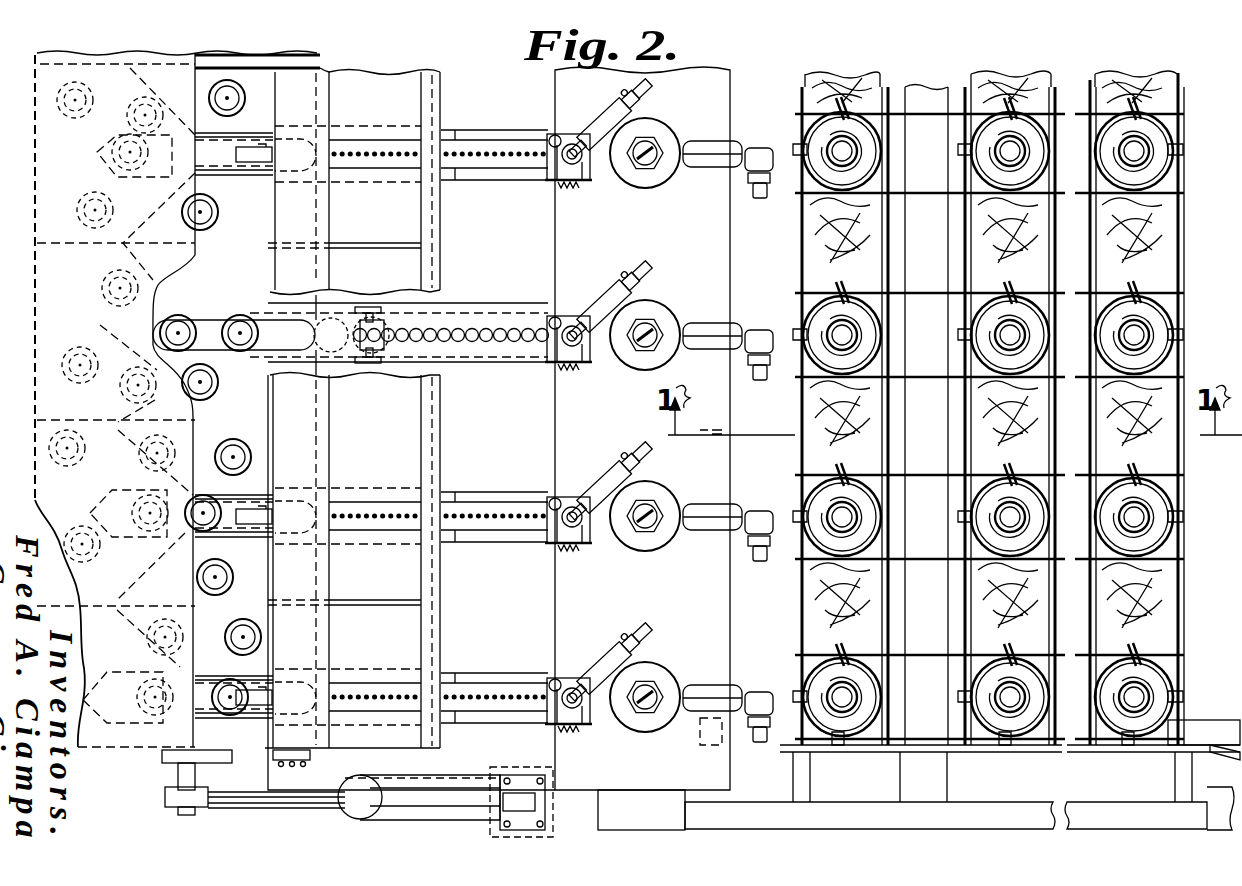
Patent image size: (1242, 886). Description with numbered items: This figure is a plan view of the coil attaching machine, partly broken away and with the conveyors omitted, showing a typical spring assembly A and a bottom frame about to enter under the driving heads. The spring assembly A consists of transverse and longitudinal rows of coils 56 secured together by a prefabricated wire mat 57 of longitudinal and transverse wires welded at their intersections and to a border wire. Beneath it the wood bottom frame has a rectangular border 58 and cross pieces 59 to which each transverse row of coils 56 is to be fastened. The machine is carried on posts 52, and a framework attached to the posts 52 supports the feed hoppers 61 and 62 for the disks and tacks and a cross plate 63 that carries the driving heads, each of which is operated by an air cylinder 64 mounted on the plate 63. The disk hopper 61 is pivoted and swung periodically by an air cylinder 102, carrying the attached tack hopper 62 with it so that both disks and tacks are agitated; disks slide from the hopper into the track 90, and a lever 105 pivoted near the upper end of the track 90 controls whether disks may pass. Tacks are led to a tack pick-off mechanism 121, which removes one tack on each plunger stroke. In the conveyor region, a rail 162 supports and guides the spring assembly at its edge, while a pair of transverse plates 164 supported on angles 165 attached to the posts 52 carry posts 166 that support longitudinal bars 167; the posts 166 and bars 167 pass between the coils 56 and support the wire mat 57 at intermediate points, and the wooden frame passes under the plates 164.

The posts 52 is at (655, 812).
The coils 56 is at (873, 683).
The prefabricated wire mat 57 is at (960, 548).
The rectangular border 58 is at (870, 633).
The cross pieces 59 is at (1157, 252).
The feed hopper 61 is at (258, 80).
The tack hopper 62 is at (388, 88).
The cross plate 63 is at (548, 598).
The air cylinder 64 is at (658, 680).
The track 90 is at (510, 353).
The air cylinder 102 is at (433, 808).
The lever 105 is at (400, 322).
The tack pick-off mechanism 121 is at (562, 671).
The rail 162 is at (1213, 723).
The transverse plates 164 is at (940, 768).
The angles 165 is at (992, 813).
The posts 166 is at (925, 415).
The bars 167 is at (818, 423).
The spring assembly A is at (895, 752).